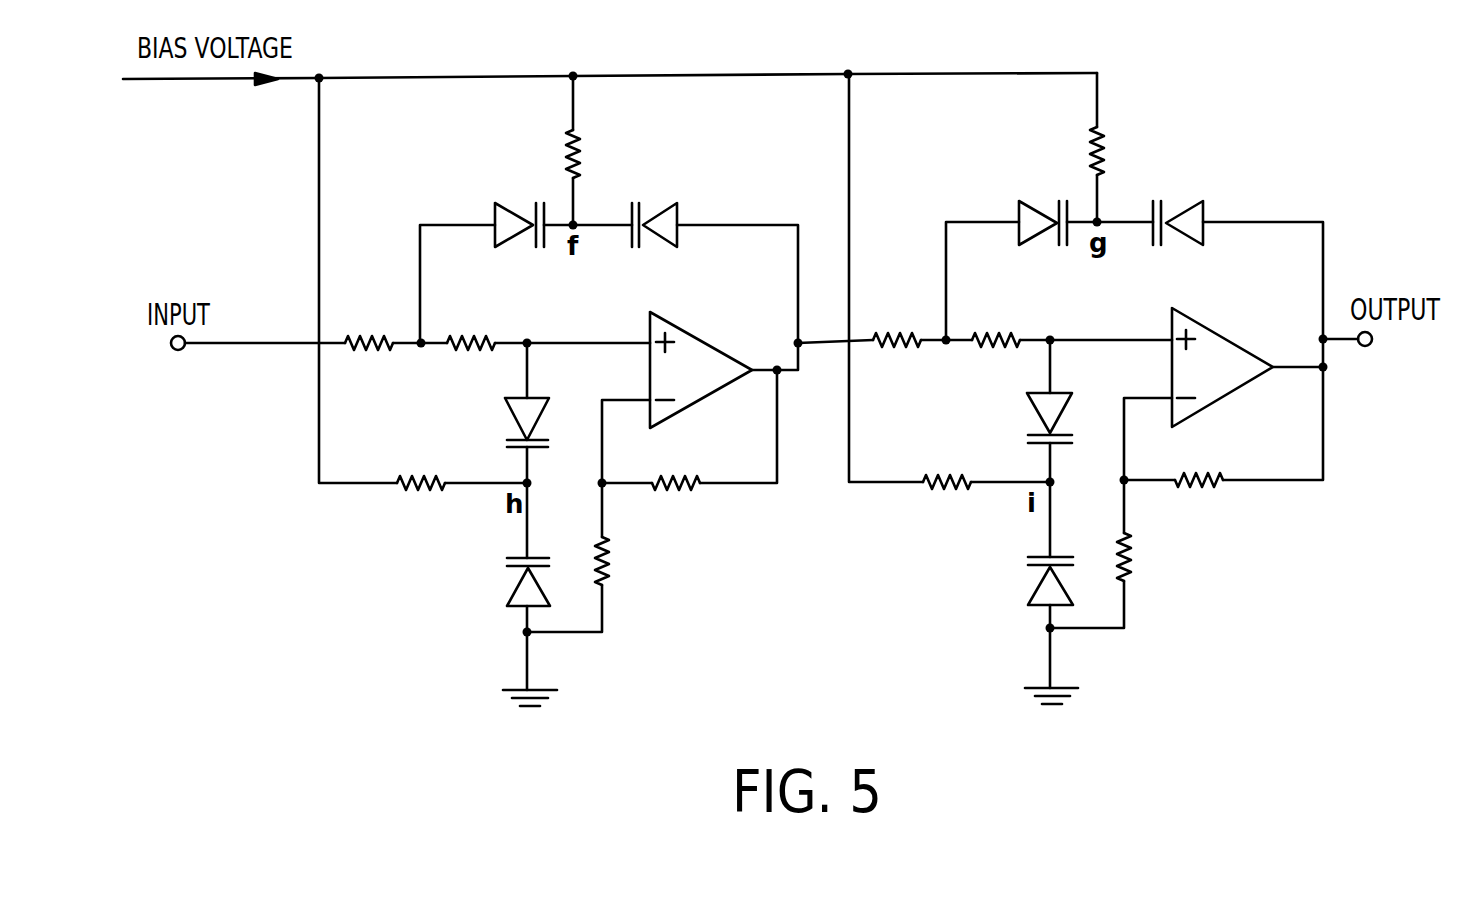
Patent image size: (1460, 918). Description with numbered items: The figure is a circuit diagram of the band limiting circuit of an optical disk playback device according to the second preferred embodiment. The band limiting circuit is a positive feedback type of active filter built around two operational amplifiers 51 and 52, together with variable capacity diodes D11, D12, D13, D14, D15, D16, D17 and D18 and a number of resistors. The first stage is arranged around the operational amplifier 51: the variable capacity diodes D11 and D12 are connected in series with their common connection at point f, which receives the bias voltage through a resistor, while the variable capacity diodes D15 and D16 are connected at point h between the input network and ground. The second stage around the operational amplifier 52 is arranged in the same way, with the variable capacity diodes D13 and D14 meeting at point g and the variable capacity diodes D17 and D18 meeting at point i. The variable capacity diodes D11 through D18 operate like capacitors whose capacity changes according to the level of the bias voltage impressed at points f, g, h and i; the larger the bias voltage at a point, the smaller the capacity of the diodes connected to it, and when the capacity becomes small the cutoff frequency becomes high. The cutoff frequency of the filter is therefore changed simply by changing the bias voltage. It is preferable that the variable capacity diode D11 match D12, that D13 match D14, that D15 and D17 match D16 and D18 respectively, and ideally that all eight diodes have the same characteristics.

The variable capacity diode D11 is at (518, 205).
The variable capacity diode D12 is at (653, 205).
The variable capacity diode D13 is at (1043, 203).
The variable capacity diode D14 is at (1176, 203).
The variable capacity diode D15 is at (495, 422).
The variable capacity diode D16 is at (499, 582).
The variable capacity diode D17 is at (1020, 418).
The variable capacity diode D18 is at (1020, 581).
The operational amplifier 51 is at (695, 357).
The operational amplifier 52 is at (1222, 358).